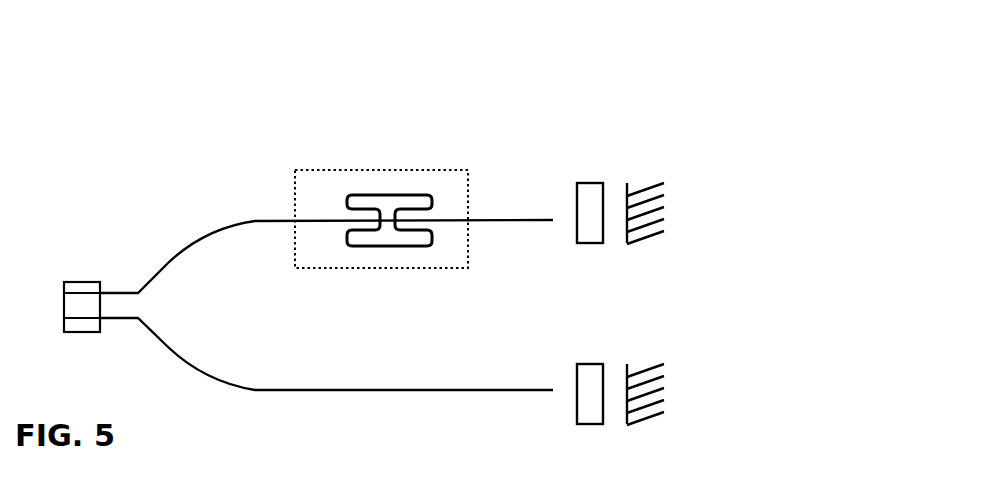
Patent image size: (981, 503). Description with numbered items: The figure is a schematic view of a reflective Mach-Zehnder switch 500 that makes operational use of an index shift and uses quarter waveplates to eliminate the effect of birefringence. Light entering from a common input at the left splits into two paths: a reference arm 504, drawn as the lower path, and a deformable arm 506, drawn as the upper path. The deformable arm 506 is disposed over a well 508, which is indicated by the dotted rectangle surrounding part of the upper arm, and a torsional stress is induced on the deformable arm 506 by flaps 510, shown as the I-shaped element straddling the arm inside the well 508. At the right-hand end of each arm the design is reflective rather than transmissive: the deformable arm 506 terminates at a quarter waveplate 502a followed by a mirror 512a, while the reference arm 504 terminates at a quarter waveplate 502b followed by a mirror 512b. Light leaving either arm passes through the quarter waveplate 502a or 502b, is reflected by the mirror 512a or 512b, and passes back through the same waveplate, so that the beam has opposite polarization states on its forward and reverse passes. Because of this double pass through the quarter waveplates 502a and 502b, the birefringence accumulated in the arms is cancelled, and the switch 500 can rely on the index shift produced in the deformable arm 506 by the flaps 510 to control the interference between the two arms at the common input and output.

The reflective Mach-Zehnder switch 500 is at (458, 82).
The quarter waveplate 502a is at (585, 193).
The quarter waveplate 502b is at (590, 400).
The reference arm 504 is at (285, 391).
The deformable arm 506 is at (235, 220).
The well 508 is at (322, 243).
The flaps 510 is at (388, 207).
The mirror 512a is at (673, 218).
The mirror 512b is at (673, 408).